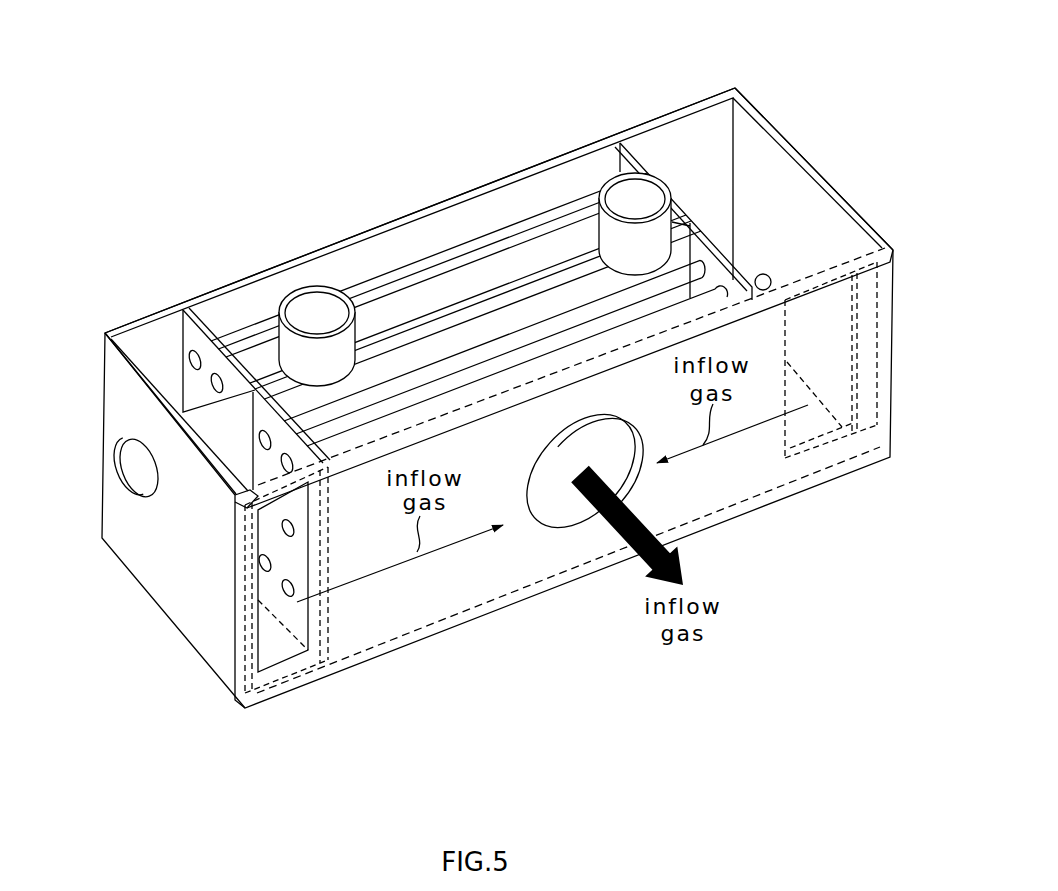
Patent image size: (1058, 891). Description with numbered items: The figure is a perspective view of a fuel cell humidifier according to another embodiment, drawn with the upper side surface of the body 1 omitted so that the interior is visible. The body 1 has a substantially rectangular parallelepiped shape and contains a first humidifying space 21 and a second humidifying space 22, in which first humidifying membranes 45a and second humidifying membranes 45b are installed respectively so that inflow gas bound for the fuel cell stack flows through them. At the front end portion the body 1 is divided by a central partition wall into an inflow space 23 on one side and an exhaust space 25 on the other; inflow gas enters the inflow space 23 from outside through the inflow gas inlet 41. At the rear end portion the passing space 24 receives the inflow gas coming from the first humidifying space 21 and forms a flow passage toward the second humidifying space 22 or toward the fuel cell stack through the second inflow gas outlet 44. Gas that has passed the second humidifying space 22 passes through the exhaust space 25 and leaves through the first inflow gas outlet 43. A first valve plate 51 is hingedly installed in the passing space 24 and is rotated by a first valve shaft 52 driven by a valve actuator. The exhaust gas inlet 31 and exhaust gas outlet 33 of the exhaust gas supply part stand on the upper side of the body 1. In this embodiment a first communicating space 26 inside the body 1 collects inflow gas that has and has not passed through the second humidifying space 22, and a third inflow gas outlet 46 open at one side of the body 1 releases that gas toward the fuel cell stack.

The body 1 is at (774, 101).
The first humidifying space 21 is at (391, 260).
The second humidifying space 22 is at (522, 314).
The inflow space 23 is at (158, 347).
The passing space 24 is at (787, 193).
The exhaust space 25 is at (236, 451).
The first communicating space 26 is at (394, 588).
The exhaust gas inlet 31 is at (596, 212).
The exhaust gas outlet 33 is at (281, 325).
The inflow gas inlet 41 is at (128, 465).
The first inflow gas outlet 43 is at (258, 633).
The second inflow gas outlet 44 is at (858, 370).
The first humidifying membranes 45a is at (447, 265).
The second humidifying membranes 45b is at (576, 316).
The third inflow gas outlet 46 is at (553, 522).
The first valve plate 51 is at (832, 350).
The first valve shaft 52 is at (771, 280).